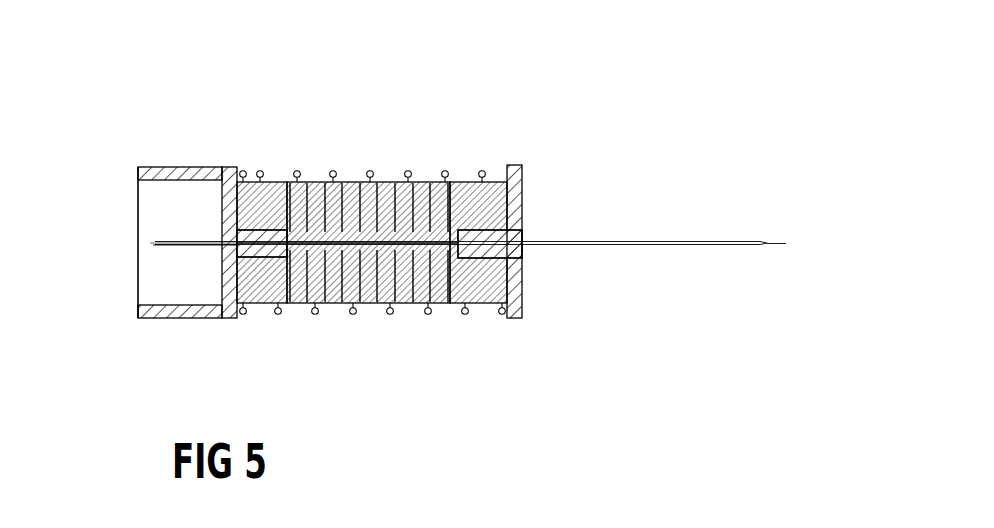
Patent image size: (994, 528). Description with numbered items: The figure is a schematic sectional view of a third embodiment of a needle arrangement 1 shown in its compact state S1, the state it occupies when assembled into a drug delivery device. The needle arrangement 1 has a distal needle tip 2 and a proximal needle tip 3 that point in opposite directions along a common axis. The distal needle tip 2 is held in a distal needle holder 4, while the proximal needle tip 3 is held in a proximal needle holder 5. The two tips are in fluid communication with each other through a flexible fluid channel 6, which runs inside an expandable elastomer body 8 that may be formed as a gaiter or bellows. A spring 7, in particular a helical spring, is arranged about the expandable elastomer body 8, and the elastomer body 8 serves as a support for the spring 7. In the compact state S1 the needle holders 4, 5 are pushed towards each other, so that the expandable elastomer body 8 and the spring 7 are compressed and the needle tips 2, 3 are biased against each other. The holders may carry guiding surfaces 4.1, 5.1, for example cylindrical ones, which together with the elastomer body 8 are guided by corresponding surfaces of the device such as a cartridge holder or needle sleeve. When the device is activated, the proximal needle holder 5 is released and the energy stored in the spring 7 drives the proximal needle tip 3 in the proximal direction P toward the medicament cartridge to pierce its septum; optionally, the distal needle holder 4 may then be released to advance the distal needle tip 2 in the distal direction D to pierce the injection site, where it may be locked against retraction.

The needle arrangement 1 is at (202, 106).
The compact state S1 is at (133, 145).
The distal needle tip 2 is at (770, 241).
The proximal needle tip 3 is at (153, 245).
The distal needle holder 4 is at (503, 252).
The guiding surface 4.1 is at (513, 167).
The proximal needle holder 5 is at (234, 293).
The guiding surface 5.1 is at (222, 167).
The flexible fluid channel 6 is at (355, 247).
The spring 7 is at (410, 167).
The expandable elastomer body 8 is at (268, 197).
The proximal direction P is at (100, 242).
The distal direction D is at (806, 250).